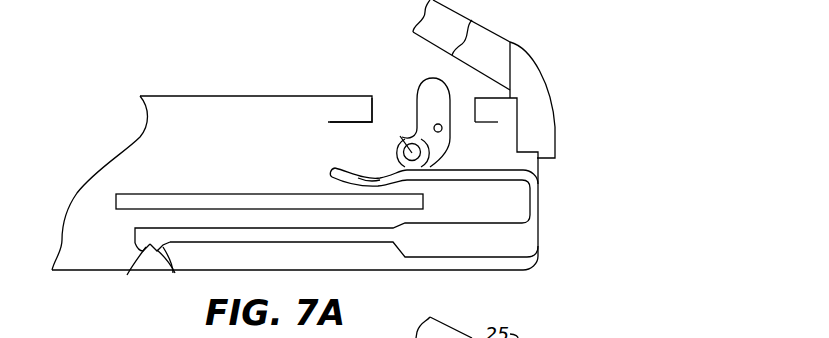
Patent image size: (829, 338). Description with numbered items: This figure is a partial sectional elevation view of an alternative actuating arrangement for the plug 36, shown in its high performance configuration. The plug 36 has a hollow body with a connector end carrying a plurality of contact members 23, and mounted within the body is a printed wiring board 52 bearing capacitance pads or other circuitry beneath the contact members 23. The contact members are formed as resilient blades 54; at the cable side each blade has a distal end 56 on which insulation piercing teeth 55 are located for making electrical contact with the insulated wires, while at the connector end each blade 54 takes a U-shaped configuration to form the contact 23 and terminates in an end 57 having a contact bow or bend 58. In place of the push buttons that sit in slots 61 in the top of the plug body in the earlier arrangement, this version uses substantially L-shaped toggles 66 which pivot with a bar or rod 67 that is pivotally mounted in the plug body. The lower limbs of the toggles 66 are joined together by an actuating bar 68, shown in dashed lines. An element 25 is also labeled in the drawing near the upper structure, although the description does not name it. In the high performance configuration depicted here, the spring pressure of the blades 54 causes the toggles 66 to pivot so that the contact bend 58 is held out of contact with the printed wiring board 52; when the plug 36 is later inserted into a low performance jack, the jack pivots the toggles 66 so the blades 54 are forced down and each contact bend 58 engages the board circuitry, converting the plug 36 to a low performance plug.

The contact members 23 is at (540, 236).
The cover 25 is at (512, 42).
The plug 36 is at (229, 96).
The printed wiring board 52 is at (212, 175).
The blades 54 is at (490, 246).
The insulation piercing teeth 55 is at (165, 272).
The distal end 56 is at (127, 273).
The end 57 is at (334, 179).
The contact bend 58 is at (360, 177).
The slots 61 is at (377, 111).
The toggles 66 is at (427, 102).
The rod 67 is at (442, 128).
The actuating bar 68 is at (397, 153).